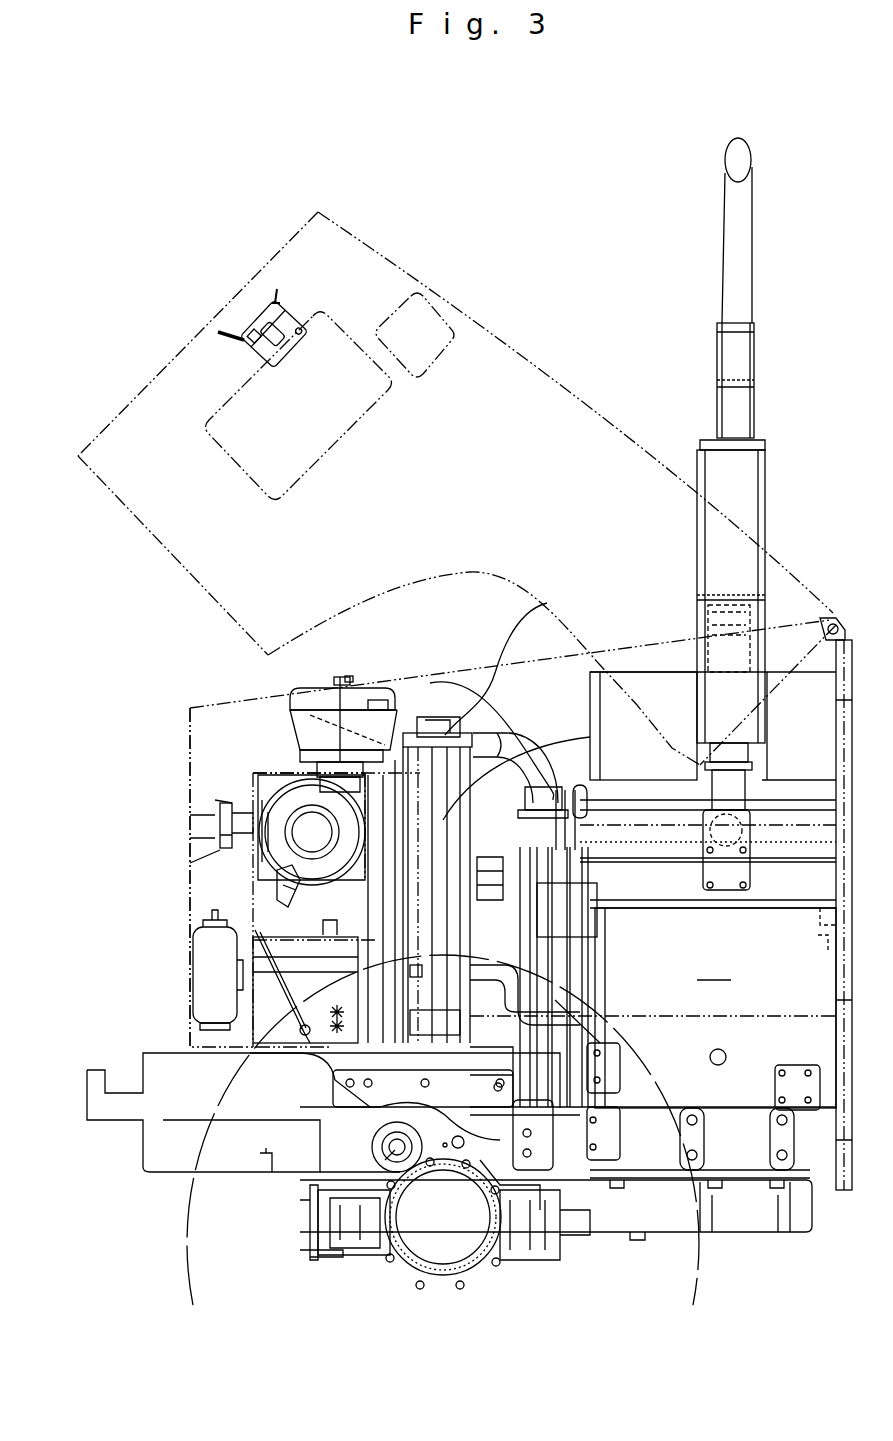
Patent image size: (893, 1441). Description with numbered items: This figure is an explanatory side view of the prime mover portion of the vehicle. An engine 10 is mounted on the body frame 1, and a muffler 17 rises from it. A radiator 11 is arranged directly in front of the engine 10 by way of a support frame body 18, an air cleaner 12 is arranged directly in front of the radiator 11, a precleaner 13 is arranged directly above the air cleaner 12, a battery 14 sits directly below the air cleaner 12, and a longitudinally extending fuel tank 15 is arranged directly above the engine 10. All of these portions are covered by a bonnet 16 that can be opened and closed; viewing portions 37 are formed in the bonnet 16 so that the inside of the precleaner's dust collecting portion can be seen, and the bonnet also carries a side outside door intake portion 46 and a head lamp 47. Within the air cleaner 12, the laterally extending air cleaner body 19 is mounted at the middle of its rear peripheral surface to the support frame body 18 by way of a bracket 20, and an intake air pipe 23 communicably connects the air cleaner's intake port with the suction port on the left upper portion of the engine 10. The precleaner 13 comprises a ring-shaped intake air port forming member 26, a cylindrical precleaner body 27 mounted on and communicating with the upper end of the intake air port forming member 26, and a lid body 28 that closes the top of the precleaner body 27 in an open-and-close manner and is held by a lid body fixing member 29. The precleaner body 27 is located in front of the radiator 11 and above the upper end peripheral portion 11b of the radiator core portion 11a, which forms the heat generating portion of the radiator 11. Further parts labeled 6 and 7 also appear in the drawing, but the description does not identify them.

The body frame 1 is at (160, 1178).
The transmission case flange 6 is at (393, 1267).
The wheel 7 is at (186, 1276).
The engine 10 is at (568, 1020).
The radiator 11 is at (434, 720).
The radiator core portion 11a is at (500, 793).
The upper end peripheral portion 11b is at (430, 727).
The air cleaner 12 is at (268, 790).
The precleaner 13 is at (380, 690).
The battery 14 is at (260, 1028).
The fuel tank 15 is at (655, 690).
The bonnet 16 is at (537, 350).
The muffler 17 is at (760, 462).
The support frame body 18 is at (345, 1058).
The air cleaner body 19 is at (263, 867).
The bracket 20 is at (362, 870).
The intake air pipe 23 is at (515, 663).
The intake air port forming member 26 is at (318, 770).
The precleaner body 27 is at (403, 718).
The lid body 28 is at (332, 690).
The lid body fixing member 29 is at (352, 678).
The viewing portion 37 is at (447, 316).
The side outside door intake portion 46 is at (343, 444).
The head lamp 47 is at (255, 328).